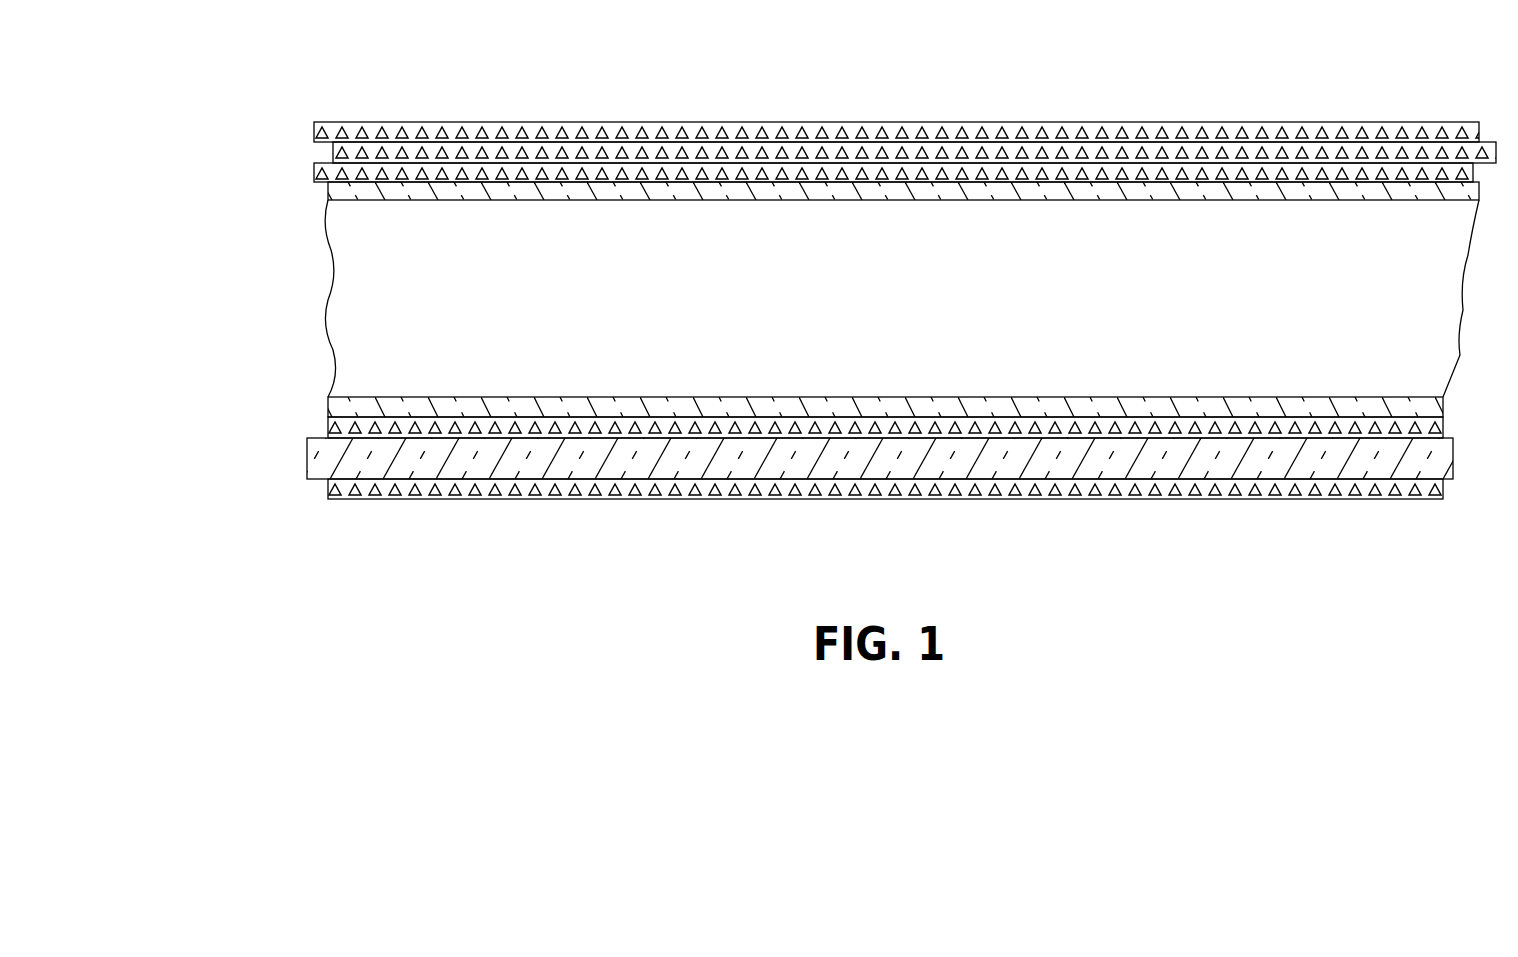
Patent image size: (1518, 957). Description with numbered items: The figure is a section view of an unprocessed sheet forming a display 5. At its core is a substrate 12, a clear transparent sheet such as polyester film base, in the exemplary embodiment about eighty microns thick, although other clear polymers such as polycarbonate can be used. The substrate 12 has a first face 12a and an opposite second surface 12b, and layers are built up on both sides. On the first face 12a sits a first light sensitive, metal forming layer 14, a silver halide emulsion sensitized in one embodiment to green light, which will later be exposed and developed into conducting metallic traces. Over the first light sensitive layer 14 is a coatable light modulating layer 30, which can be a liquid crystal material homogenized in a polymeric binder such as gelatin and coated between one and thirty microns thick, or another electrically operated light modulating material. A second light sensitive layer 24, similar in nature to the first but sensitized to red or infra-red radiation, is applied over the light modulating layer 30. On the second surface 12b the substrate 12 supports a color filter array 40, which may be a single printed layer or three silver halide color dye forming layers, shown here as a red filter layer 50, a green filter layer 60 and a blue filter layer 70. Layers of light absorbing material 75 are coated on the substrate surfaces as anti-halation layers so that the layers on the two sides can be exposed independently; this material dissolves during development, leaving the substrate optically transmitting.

The display 5 is at (181, 115).
The color filter array 40 is at (278, 122).
The red filter layer 50 is at (456, 172).
The green filter layer 60 is at (605, 152).
The blue filter layer 70 is at (730, 128).
The substrate 12 is at (368, 282).
The first face 12a is at (370, 403).
The second surface 12b is at (360, 192).
The light absorbing material 75 is at (1369, 186).
The first light sensitive layer 14 is at (512, 430).
The light modulating layer 30 is at (690, 468).
The second light sensitive layer 24 is at (880, 494).